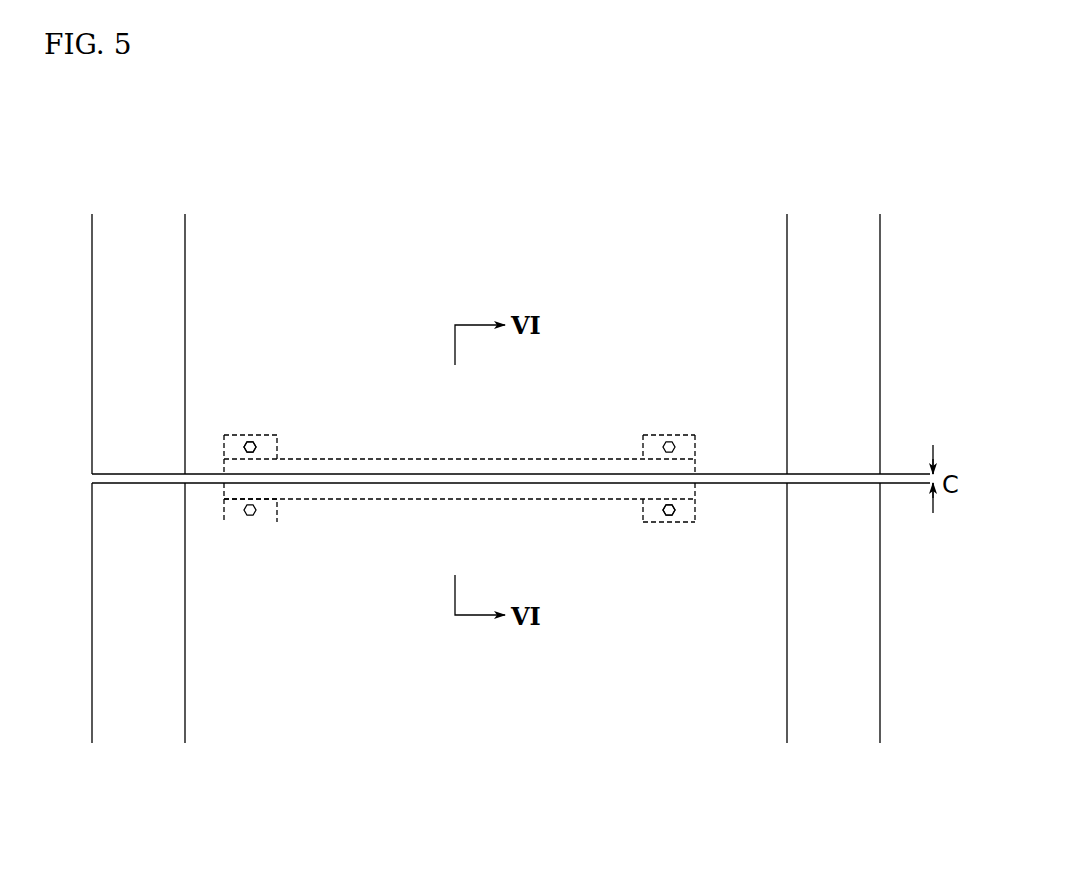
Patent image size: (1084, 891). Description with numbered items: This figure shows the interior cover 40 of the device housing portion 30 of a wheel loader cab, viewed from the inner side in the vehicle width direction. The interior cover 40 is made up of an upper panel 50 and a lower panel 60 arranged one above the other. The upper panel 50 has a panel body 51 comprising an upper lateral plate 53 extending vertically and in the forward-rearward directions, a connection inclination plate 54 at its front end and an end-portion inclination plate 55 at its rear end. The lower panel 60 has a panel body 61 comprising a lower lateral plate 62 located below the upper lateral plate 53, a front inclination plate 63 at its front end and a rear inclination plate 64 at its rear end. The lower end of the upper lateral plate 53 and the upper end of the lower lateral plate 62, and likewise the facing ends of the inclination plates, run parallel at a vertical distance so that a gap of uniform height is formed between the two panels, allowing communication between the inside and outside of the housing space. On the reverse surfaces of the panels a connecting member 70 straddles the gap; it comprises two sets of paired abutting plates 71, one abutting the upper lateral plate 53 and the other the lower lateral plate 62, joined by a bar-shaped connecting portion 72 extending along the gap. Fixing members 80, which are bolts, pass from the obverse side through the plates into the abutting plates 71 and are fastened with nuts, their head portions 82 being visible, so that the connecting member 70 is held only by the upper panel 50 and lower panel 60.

The device housing portion 30 is at (779, 170).
The interior cover 40 is at (689, 198).
The upper panel 50 is at (895, 273).
The panel body 51 is at (882, 357).
The upper lateral plate 53 is at (318, 285).
The connection inclination plate 54 is at (134, 255).
The end-portion inclination plate 55 is at (832, 272).
The lower panel 60 is at (892, 685).
The panel body 61 is at (882, 601).
The lower lateral plate 62 is at (607, 618).
The front inclination plate 63 is at (131, 686).
The rear inclination plate 64 is at (831, 686).
The connecting member 70 is at (370, 501).
The abutting plate 71 is at (279, 447).
The connecting portion 72 is at (513, 458).
The fixing member 80 is at (438, 493).
The head portion 82 is at (250, 441).